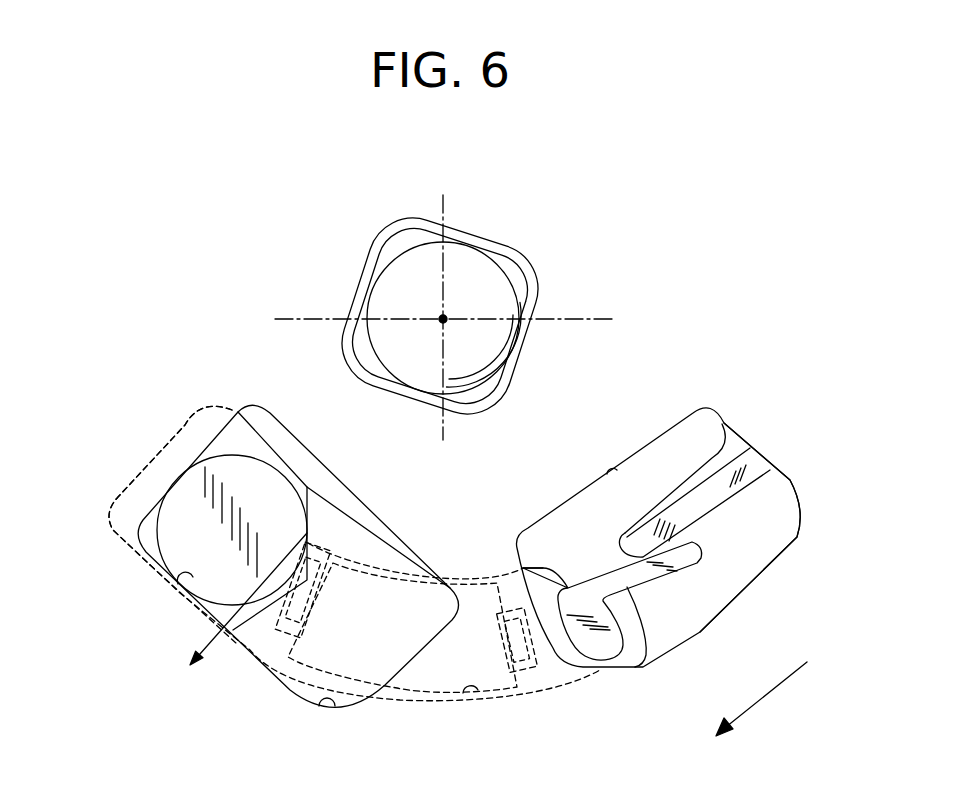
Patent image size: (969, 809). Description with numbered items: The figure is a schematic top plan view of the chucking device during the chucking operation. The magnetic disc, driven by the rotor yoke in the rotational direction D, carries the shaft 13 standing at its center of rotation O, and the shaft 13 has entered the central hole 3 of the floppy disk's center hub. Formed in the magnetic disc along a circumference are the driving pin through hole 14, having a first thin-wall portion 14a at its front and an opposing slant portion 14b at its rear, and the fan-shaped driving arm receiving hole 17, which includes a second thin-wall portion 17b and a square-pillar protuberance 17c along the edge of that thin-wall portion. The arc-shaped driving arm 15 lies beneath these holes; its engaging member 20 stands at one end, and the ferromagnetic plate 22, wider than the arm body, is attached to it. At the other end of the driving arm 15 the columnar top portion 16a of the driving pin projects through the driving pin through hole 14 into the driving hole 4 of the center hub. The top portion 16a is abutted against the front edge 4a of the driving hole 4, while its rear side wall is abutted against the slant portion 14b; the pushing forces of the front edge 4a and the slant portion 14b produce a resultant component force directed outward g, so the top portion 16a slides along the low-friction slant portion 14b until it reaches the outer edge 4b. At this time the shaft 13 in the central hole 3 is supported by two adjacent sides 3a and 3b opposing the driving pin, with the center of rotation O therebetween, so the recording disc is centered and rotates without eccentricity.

The central hole 3 is at (483, 390).
The side 3a is at (468, 245).
The side 3b is at (518, 342).
The shaft 13 is at (487, 288).
The center of rotation O is at (443, 319).
The driving hole 4 is at (333, 708).
The front edge 4a is at (178, 472).
The outer edge 4b is at (186, 580).
The driving pin through hole 14 is at (258, 640).
The first thin-wall portion 14a is at (232, 438).
The slant portion 14b is at (310, 524).
The top portion 16a is at (185, 541).
The outward component force g is at (236, 616).
The ferromagnetic plate 22 is at (482, 692).
The driving arm receiving hole 17 is at (611, 470).
The second thin-wall portion 17b is at (760, 507).
The protuberance 17c is at (680, 511).
The engaging member 20 is at (667, 580).
The driving arm 15 is at (538, 557).
The rotational direction D is at (744, 709).